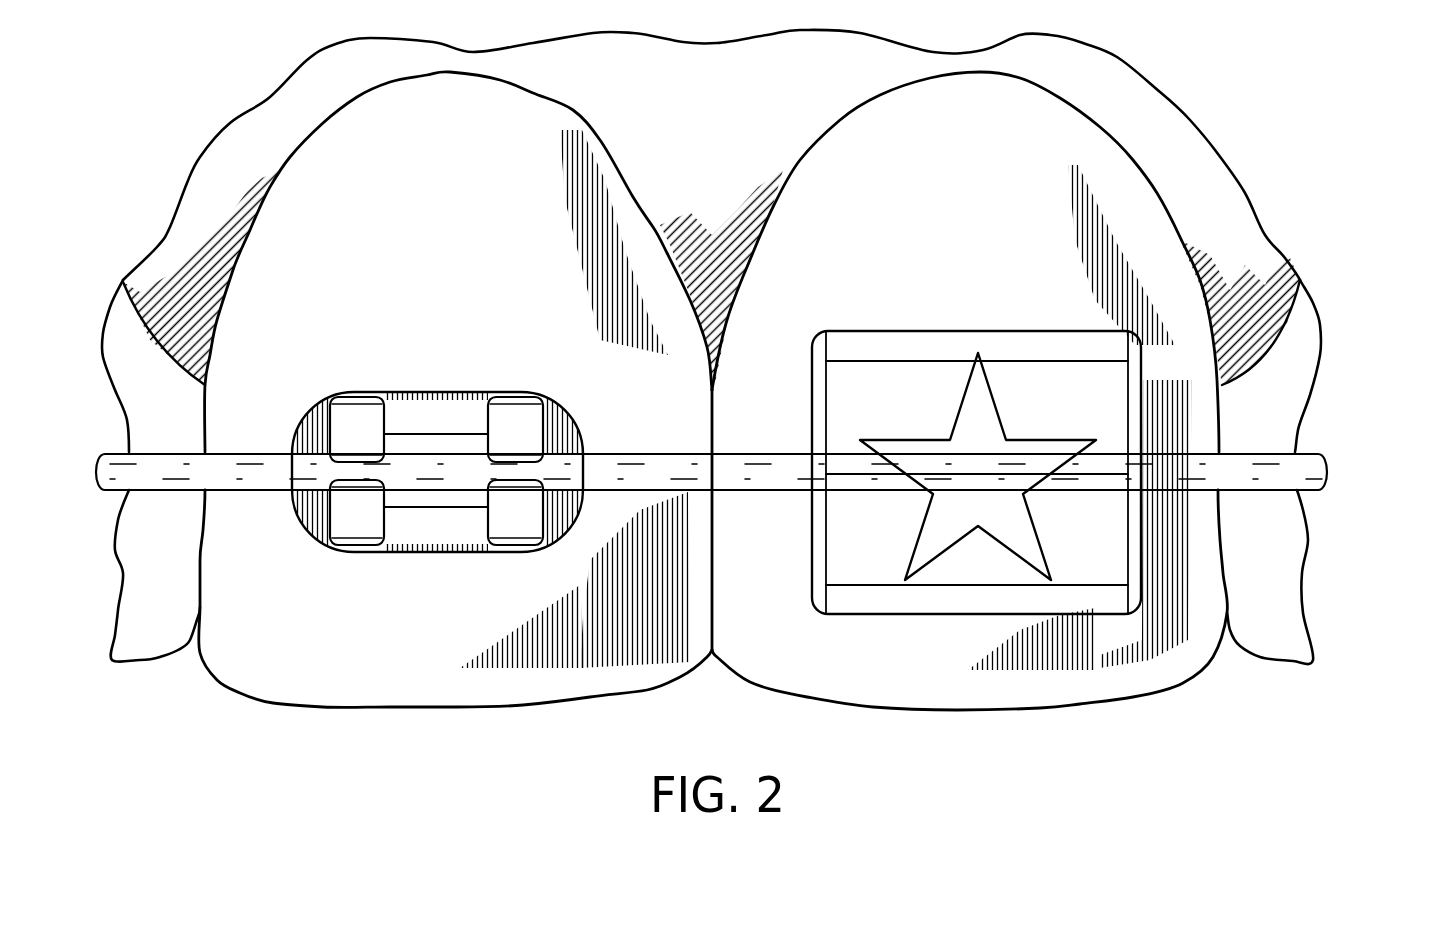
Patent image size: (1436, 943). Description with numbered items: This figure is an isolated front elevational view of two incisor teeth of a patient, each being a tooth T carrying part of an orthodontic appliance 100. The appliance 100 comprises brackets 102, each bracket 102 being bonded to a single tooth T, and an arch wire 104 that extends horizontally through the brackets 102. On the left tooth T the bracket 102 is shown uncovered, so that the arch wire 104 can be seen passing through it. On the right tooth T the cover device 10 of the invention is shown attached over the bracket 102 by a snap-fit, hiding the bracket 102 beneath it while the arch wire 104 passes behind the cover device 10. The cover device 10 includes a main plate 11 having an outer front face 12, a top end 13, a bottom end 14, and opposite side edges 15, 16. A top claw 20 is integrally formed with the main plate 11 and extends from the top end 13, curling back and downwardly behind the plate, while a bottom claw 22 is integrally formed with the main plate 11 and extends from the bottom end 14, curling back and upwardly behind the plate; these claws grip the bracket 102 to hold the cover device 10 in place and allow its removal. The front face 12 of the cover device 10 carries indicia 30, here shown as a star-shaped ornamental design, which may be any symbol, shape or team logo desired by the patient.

The cover device 10 is at (1065, 503).
The main plate 11 is at (864, 412).
The outer front face 12 is at (886, 380).
The top end 13 is at (1016, 362).
The bottom end 14 is at (1086, 588).
The side edge 15 is at (826, 530).
The side edge 16 is at (1128, 533).
The top claw 20 is at (936, 333).
The bottom claw 22 is at (857, 620).
The indicia 30 is at (977, 460).
The orthodontic appliance 100 is at (437, 447).
The bracket 102 is at (402, 560).
The arch wire 104 is at (240, 474).
The tooth T is at (545, 145).